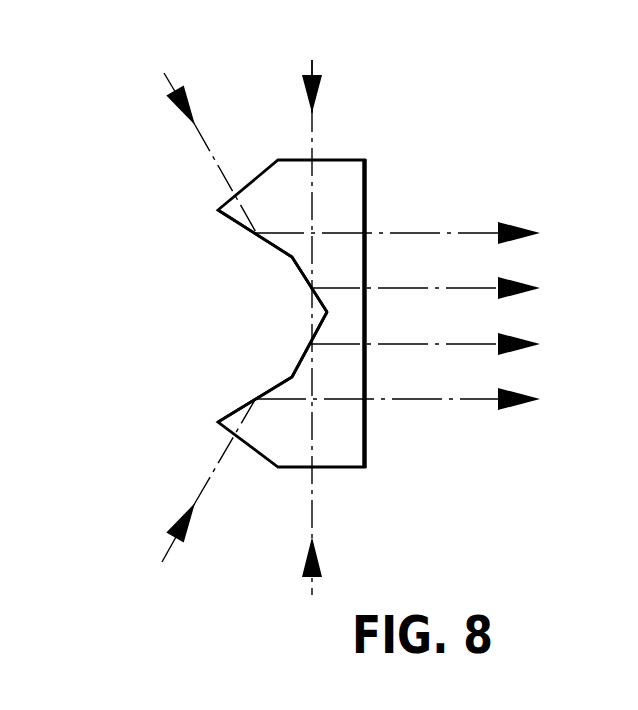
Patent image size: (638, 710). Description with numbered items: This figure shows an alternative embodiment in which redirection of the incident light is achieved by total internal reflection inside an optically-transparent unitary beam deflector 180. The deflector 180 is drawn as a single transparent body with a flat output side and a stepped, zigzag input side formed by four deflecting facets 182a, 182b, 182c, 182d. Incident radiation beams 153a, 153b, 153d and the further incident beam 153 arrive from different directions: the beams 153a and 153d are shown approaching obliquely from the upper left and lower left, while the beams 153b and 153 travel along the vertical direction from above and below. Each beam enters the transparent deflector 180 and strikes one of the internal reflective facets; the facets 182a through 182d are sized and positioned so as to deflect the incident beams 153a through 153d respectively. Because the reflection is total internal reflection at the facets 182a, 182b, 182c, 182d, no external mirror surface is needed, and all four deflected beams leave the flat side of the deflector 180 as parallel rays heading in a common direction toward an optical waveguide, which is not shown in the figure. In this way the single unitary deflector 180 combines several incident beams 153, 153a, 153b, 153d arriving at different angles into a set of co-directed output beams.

The optically-transparent unitary beam deflector 180 is at (366, 198).
The deflecting facet 182a is at (240, 225).
The deflecting facet 182b is at (303, 278).
The deflecting facet 182c is at (298, 362).
The deflecting facet 182d is at (229, 416).
The incident radiation beam 153 is at (357, 327).
The incident radiation beam 153a is at (221, 172).
The incident radiation beam 153b is at (313, 150).
The incident radiation beam 153d is at (221, 461).